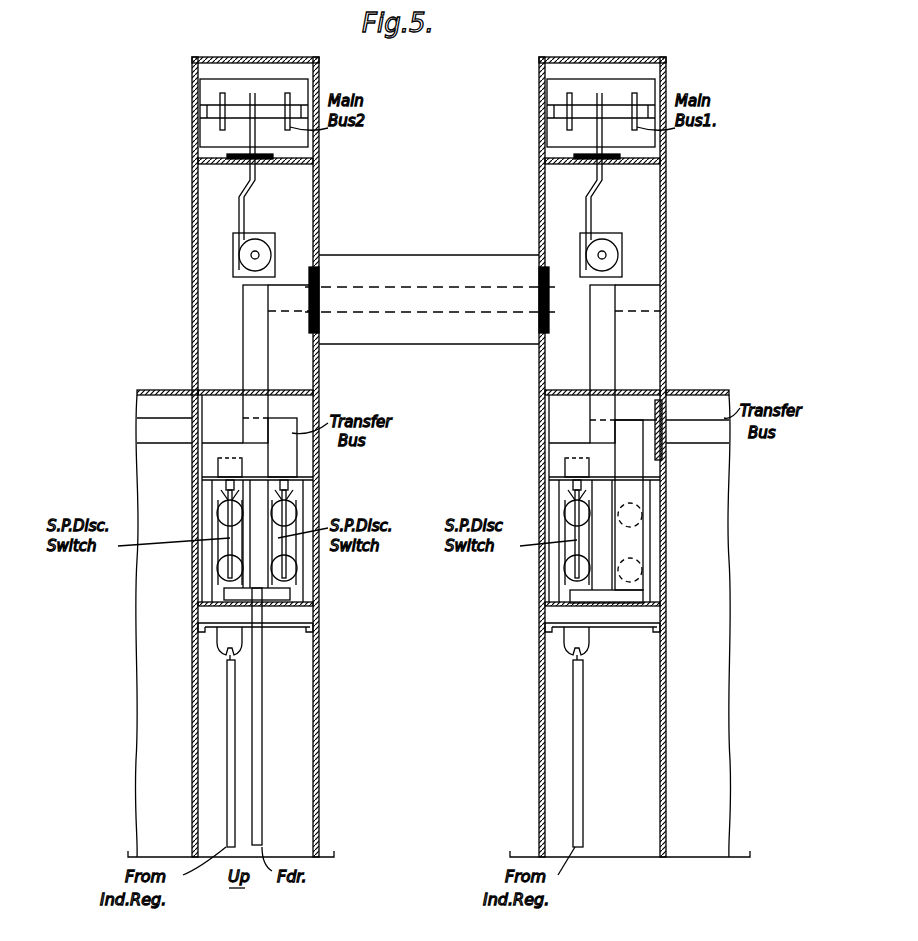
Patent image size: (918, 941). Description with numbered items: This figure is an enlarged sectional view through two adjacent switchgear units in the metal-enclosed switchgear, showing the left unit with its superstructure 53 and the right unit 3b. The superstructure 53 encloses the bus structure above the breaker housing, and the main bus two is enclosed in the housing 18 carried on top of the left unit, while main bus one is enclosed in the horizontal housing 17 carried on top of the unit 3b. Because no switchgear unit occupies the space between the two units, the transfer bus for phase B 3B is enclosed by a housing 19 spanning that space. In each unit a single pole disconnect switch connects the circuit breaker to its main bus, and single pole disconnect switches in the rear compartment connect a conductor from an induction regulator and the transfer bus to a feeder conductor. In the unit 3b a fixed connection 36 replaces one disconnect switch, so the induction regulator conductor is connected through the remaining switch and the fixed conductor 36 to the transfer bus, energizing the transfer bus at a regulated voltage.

The horizontal housing 17 is at (541, 120).
The housing 18 is at (193, 118).
The housing 19 is at (449, 256).
The transfer bus for phase B 3B is at (430, 290).
The fixed connection 36 is at (636, 547).
The superstructure 53 is at (175, 286).
The switchgear unit 3b is at (635, 888).